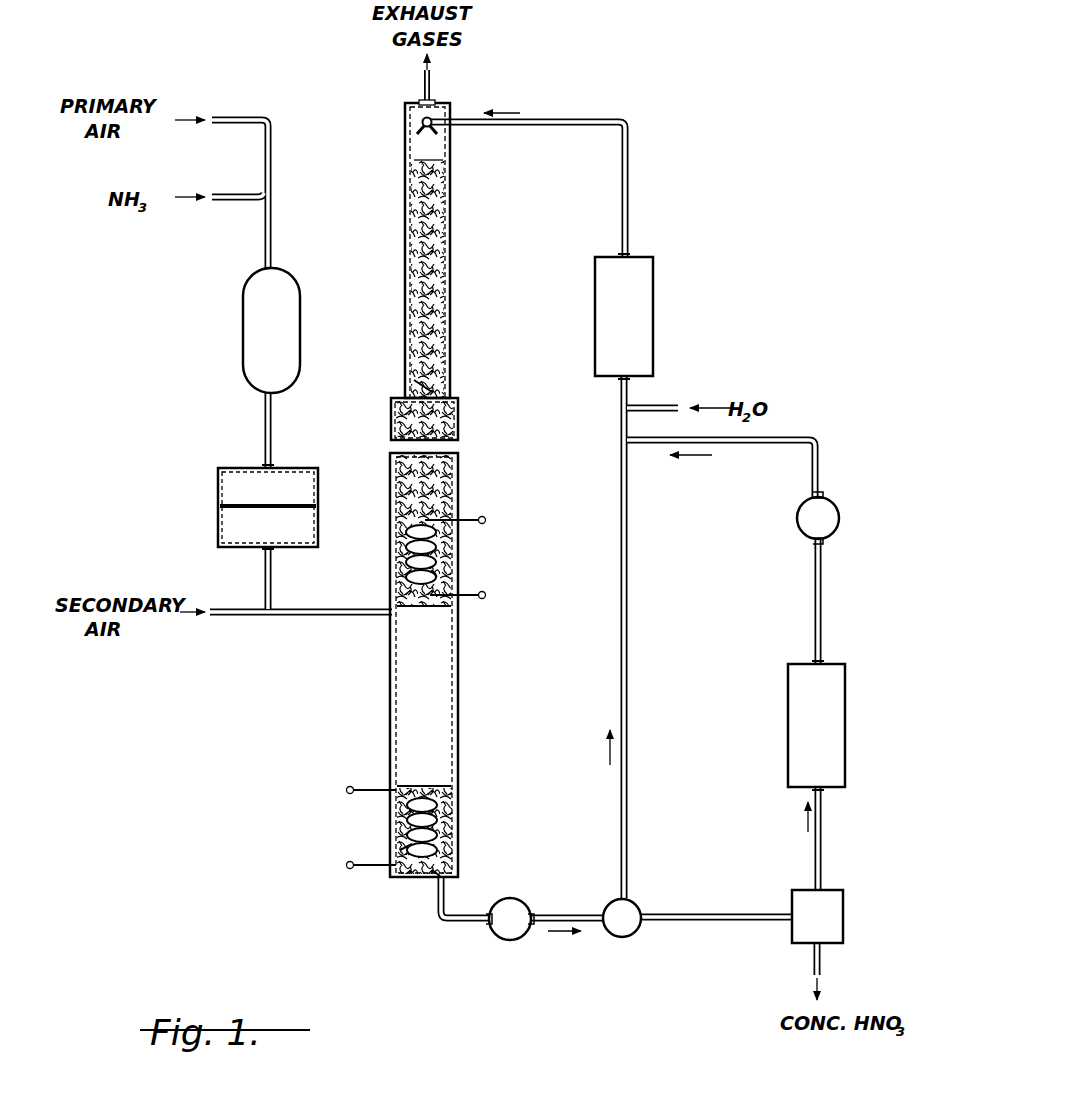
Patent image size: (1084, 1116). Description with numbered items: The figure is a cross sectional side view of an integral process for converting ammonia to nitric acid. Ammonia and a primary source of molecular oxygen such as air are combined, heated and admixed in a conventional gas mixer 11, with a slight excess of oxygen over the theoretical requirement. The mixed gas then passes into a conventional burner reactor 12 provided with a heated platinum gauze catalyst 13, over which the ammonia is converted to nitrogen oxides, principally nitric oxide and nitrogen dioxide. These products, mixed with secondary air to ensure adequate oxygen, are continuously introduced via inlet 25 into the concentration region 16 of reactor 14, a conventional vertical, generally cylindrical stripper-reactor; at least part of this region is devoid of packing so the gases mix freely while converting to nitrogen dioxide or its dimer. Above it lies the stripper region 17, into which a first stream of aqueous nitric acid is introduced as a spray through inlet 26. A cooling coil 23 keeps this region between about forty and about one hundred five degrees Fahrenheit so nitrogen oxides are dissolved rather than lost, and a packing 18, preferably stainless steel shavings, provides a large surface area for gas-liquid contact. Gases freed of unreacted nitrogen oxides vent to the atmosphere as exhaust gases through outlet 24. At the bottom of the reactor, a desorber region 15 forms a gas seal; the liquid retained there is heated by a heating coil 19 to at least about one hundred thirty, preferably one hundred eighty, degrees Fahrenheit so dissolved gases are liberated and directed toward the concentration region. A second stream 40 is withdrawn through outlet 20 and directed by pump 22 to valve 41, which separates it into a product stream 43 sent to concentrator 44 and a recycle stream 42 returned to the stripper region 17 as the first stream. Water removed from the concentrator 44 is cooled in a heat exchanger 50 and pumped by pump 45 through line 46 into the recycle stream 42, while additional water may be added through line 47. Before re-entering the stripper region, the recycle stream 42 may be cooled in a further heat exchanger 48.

The gas mixer 11 is at (244, 346).
The burner reactor 12 is at (222, 468).
The heated platinum gauze catalyst 13 is at (236, 507).
The reactor 14 is at (424, 471).
The desorber region 15 is at (448, 852).
The concentration region 16 is at (418, 688).
The stripper region 17 is at (440, 316).
The packing 18 is at (432, 392).
The heating coil 19 is at (364, 794).
The outlet 20 is at (436, 876).
The pump 22 is at (508, 942).
The cooling coil 23 is at (438, 518).
The outlet 24 is at (432, 104).
The inlet 25 is at (388, 621).
The inlet 26 is at (438, 128).
The second stream 40 is at (442, 924).
The valve 41 is at (614, 938).
The recycle stream 42 is at (628, 618).
The product stream 43 is at (696, 886).
The concentrator 44 is at (840, 916).
The pump 45 is at (800, 534).
The line 46 is at (822, 586).
The line 47 is at (642, 408).
The heat exchanger 48 is at (644, 314).
The heat exchanger 50 is at (844, 680).